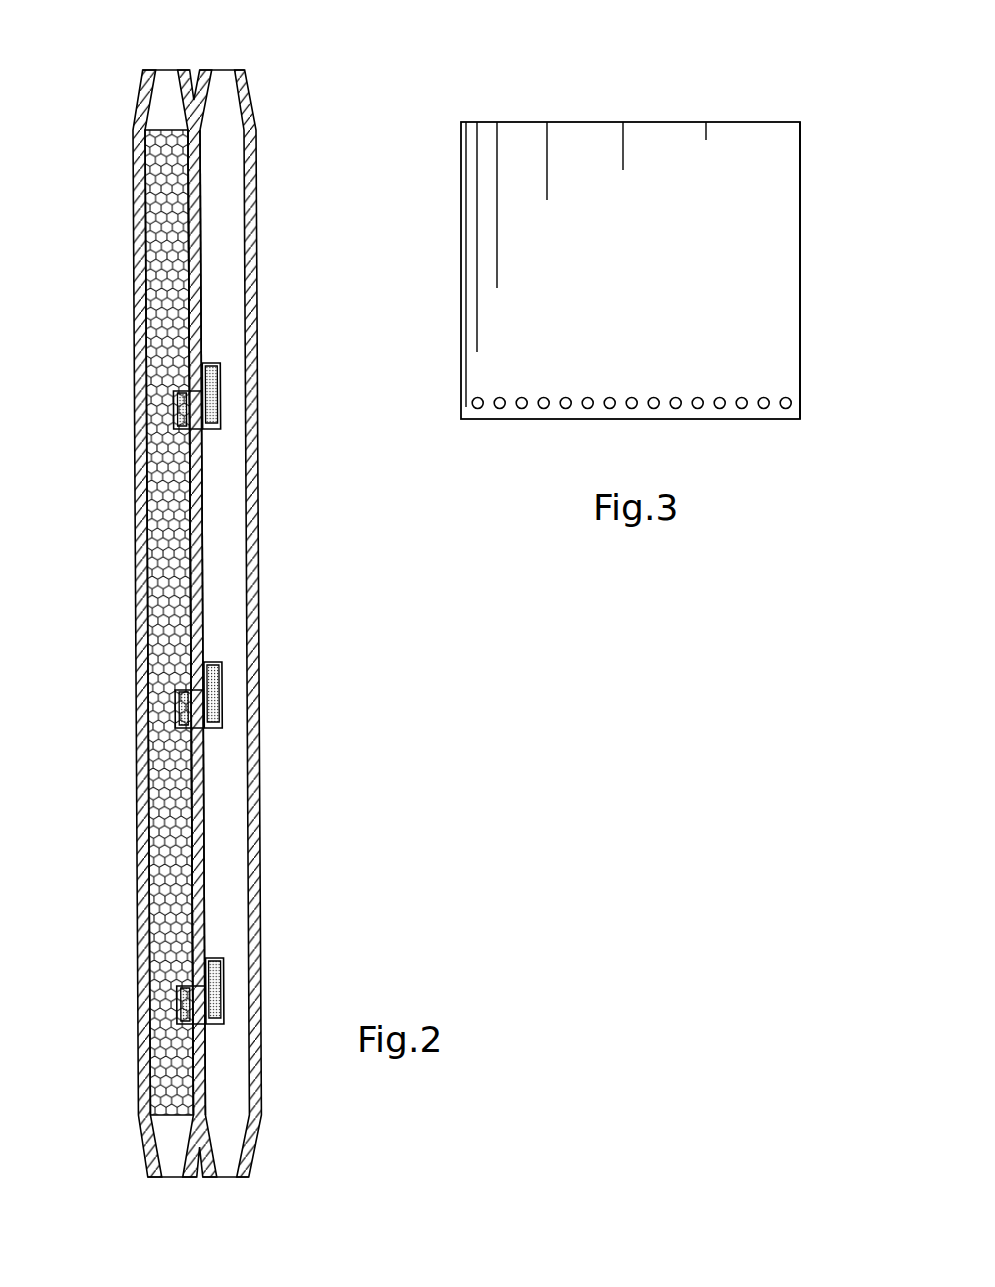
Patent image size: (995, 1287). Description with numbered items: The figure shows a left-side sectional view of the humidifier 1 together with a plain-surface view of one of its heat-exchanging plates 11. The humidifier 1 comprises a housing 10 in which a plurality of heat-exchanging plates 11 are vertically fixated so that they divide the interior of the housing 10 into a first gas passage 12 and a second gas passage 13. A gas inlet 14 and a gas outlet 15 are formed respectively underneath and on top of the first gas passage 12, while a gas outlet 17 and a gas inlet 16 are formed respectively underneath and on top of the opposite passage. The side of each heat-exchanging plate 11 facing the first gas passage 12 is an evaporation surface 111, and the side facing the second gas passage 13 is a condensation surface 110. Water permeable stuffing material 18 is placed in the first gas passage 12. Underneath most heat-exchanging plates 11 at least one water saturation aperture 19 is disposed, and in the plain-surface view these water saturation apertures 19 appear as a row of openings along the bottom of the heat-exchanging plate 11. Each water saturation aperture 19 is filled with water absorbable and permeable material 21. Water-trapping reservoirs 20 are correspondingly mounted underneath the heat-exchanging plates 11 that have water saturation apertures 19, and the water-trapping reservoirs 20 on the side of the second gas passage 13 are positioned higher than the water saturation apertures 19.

In FIG. 2, the humidifier 1 is at (227, 613).
In FIG. 2, the housing 10 is at (258, 572).
In FIG. 2, the heat-exchanging plate 11 is at (201, 220).
In FIG. 3, the heat-exchanging plate 11 is at (728, 110).
In FIG. 2, the condensation surface 110 is at (201, 270).
In FIG. 3, the condensation surface 110 is at (795, 255).
In FIG. 2, the evaporation surface 111 is at (183, 185).
In FIG. 2, the first gas passage 12 is at (145, 503).
In FIG. 2, the second gas passage 13 is at (228, 187).
In FIG. 2, the gas inlet 14 is at (172, 1178).
In FIG. 2, the gas outlet 15 is at (158, 67).
In FIG. 2, the gas inlet 16 is at (227, 68).
In FIG. 2, the gas outlet 17 is at (233, 1178).
In FIG. 2, the water permeable stuffing material 18 is at (170, 570).
In FIG. 2, the water saturation aperture 19 is at (185, 418).
In FIG. 3, the water saturation aperture 19 is at (742, 409).
In FIG. 2, the water-trapping reservoir 20 is at (220, 412).
In FIG. 2, the water absorbable and permeable material 21 is at (207, 393).